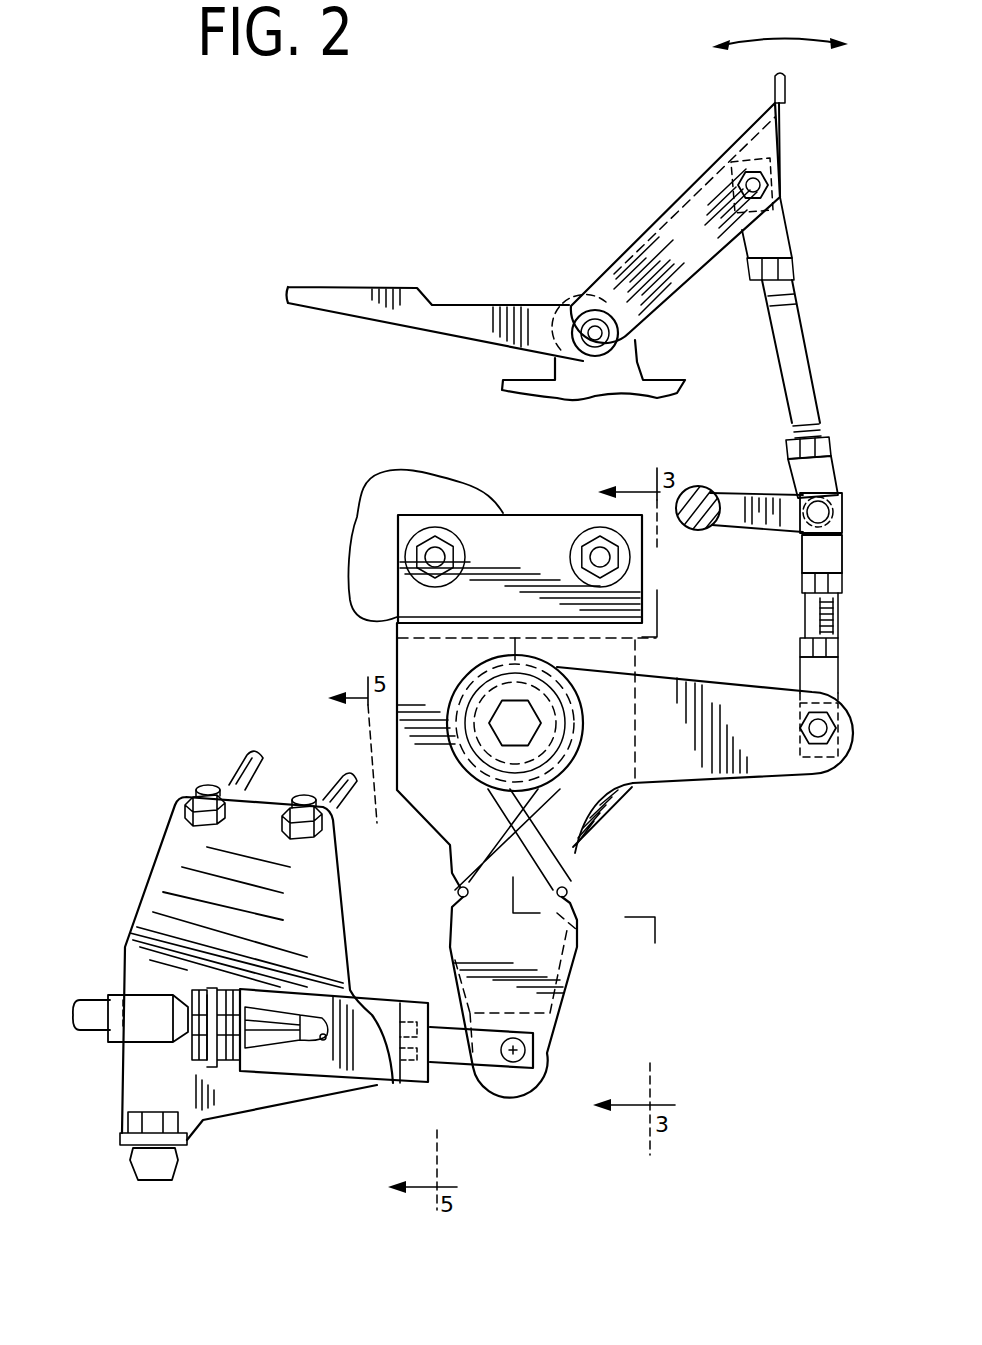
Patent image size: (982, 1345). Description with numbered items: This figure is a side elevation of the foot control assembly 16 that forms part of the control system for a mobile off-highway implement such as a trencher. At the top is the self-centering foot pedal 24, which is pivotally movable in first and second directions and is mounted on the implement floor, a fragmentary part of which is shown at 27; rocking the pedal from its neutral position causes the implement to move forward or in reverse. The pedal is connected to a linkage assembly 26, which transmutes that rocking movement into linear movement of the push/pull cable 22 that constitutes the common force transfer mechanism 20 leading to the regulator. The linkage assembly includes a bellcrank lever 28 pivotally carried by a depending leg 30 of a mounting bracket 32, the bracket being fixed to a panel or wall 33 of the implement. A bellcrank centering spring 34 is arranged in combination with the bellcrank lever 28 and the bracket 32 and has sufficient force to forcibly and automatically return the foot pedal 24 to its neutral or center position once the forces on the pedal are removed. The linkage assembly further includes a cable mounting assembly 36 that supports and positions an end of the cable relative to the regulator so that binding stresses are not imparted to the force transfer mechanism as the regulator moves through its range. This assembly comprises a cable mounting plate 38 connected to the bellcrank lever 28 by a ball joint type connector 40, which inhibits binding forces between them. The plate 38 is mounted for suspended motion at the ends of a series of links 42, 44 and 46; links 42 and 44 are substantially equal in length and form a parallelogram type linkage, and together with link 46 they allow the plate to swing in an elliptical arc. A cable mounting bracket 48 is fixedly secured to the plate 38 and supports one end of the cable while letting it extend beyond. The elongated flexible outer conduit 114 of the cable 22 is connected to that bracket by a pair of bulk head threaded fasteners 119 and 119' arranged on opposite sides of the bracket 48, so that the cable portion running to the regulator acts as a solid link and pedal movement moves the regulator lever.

The foot control assembly 16 is at (228, 556).
The force transfer mechanism 20 is at (138, 972).
The push/pull cable 22 is at (88, 1048).
The self-centering foot pedal 24 is at (425, 303).
The linkage assembly 26 is at (664, 874).
The implement floor 27 is at (618, 360).
The bellcrank lever 28 is at (677, 763).
The depending leg 30 is at (592, 820).
The mounting bracket 32 is at (548, 508).
The panel or wall 33 is at (385, 512).
The bellcrank centering spring 34 is at (573, 689).
The cable mounting assembly 36 is at (138, 875).
The cable mounting plate 38 is at (323, 950).
The ball joint type connector 40 is at (523, 1047).
The link 42 is at (243, 773).
The link 44 is at (327, 792).
The link 46 is at (160, 1160).
The cable mounting bracket 48 is at (400, 1085).
The outer conduit 114 is at (88, 1000).
The bulk head threaded fastener 119 is at (184, 1039).
The bulk head threaded fastener 119' is at (275, 982).